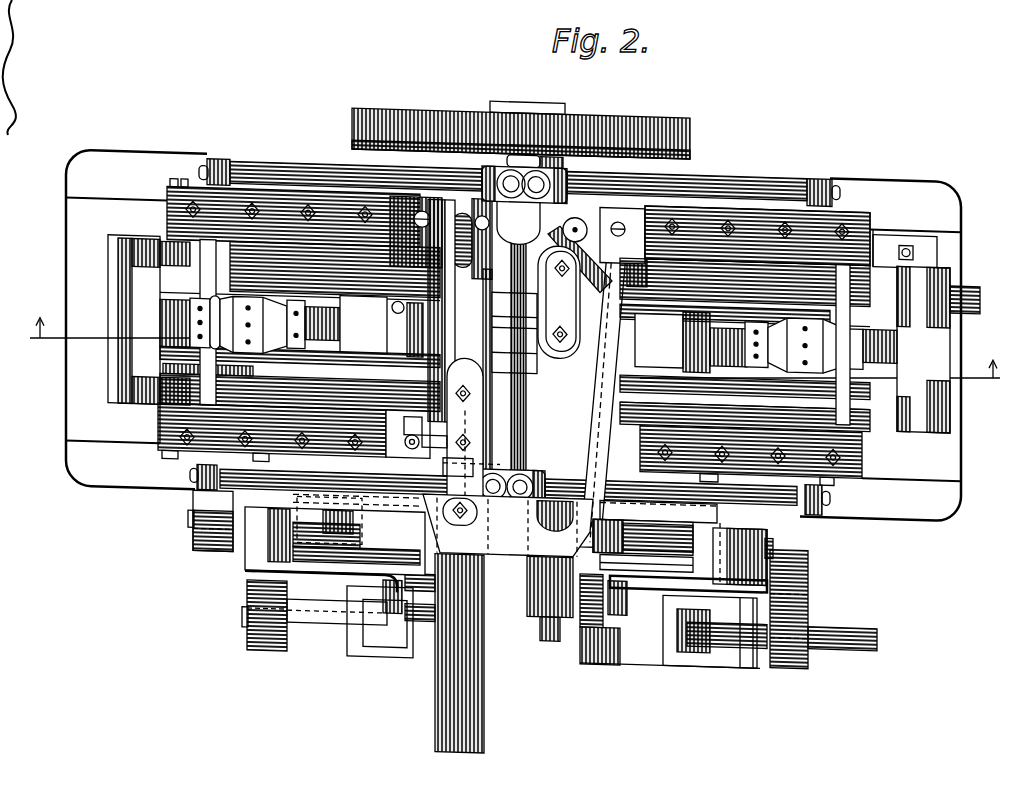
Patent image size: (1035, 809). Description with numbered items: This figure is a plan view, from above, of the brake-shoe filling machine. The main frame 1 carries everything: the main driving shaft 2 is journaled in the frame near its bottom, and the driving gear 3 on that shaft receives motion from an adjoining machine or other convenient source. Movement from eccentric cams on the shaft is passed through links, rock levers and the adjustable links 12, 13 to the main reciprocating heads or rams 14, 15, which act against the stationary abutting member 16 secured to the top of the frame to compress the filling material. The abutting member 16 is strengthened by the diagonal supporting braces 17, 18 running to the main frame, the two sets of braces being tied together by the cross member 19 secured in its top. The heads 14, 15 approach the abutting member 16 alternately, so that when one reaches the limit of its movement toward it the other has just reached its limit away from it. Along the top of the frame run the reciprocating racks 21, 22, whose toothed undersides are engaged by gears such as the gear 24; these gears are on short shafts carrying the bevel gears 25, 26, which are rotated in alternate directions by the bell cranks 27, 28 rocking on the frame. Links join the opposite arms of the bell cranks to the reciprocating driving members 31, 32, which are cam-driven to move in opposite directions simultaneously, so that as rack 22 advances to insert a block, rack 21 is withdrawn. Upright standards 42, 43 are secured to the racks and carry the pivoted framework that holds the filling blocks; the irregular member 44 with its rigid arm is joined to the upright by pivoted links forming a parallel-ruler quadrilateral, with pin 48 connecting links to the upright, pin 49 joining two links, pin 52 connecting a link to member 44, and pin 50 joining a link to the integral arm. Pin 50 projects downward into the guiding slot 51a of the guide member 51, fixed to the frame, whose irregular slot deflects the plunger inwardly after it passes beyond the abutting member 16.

The main frame 1 is at (972, 449).
The main driving shaft 2 is at (531, 102).
The driving gear 3 is at (440, 116).
The adjustable link 12 is at (843, 290).
The adjustable link 13 is at (253, 308).
The main reciprocating head 14 is at (274, 322).
The main reciprocating head 15 is at (745, 261).
The stationary abutting member 16 is at (500, 302).
The diagonal supporting brace 17 is at (358, 176).
The diagonal supporting brace 18 is at (718, 176).
The cross member 19 is at (542, 160).
The reciprocating rack 21 is at (435, 715).
The reciprocating rack 22 is at (550, 596).
The gear 24 is at (550, 624).
The bevel gear 25 is at (395, 609).
The bevel gear 26 is at (612, 612).
The bell crank 27 is at (300, 579).
The bell crank 28 is at (795, 584).
The reciprocating driving member 31 is at (355, 650).
The reciprocating driving member 32 is at (380, 559).
The upright standard 42 is at (455, 460).
The upright standard 43 is at (565, 318).
The irregular member 44 is at (453, 392).
The pin 48 is at (485, 448).
The pin 49 is at (404, 445).
The guide pin 50 is at (580, 220).
The guide member 51 is at (441, 308).
The guiding slot 51a is at (462, 213).
The pin 52 is at (485, 394).